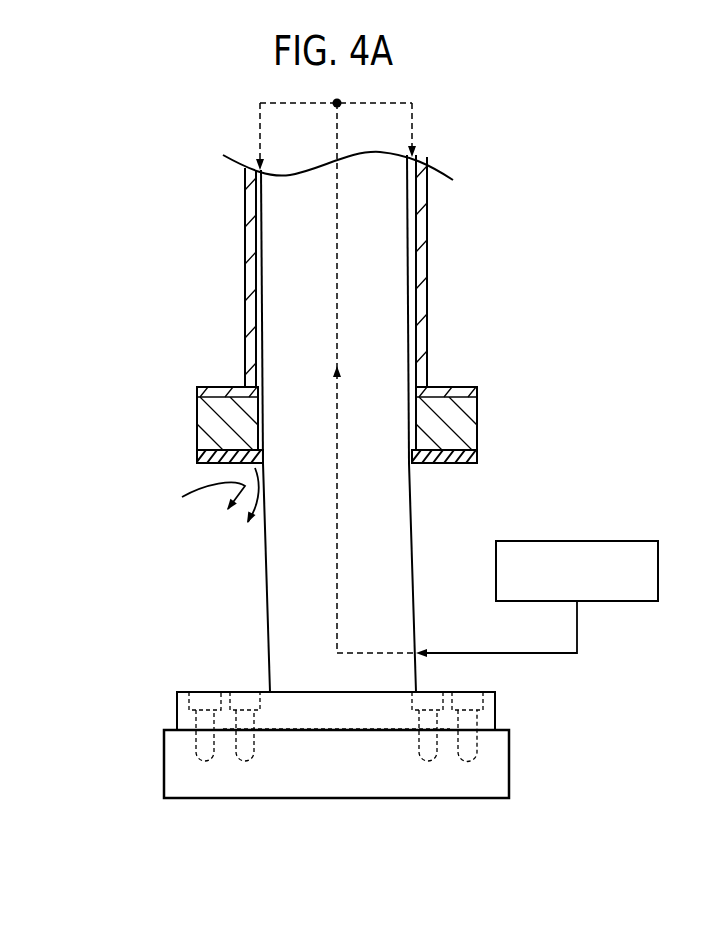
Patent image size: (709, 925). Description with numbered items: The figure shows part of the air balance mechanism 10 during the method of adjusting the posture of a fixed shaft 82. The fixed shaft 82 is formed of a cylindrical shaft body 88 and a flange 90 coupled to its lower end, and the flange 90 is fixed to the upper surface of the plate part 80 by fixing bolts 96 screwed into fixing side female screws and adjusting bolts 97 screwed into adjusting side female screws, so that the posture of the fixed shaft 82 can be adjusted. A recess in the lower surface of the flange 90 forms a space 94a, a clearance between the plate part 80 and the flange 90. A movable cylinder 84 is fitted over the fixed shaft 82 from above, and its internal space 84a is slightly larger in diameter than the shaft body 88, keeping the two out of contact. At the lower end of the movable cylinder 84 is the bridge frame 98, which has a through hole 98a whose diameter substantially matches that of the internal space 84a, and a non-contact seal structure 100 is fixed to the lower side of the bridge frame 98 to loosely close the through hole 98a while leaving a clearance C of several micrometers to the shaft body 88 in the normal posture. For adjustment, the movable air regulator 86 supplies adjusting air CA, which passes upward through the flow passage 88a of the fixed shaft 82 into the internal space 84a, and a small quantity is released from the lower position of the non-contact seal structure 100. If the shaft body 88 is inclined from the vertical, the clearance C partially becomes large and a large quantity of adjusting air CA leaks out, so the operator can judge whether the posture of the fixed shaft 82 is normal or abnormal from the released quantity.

The air balance mechanism 10 is at (103, 183).
The plate part 80 is at (510, 765).
The fixed shaft 82 is at (252, 628).
The movable cylinder 84 is at (449, 268).
The internal space 84a is at (410, 200).
The movable air regulator 86 is at (553, 541).
The shaft body 88 is at (413, 503).
The flow passage 88a is at (337, 590).
The flange 90 is at (496, 712).
The space 94a is at (275, 732).
The fixing bolt 96 is at (470, 808).
The adjusting bolt 97 is at (431, 808).
The bridge frame 98 is at (197, 408).
The through hole 98a is at (412, 404).
The non-contact seal structure 100 is at (197, 457).
The clearance C is at (263, 450).
The adjusting air CA is at (367, 569).